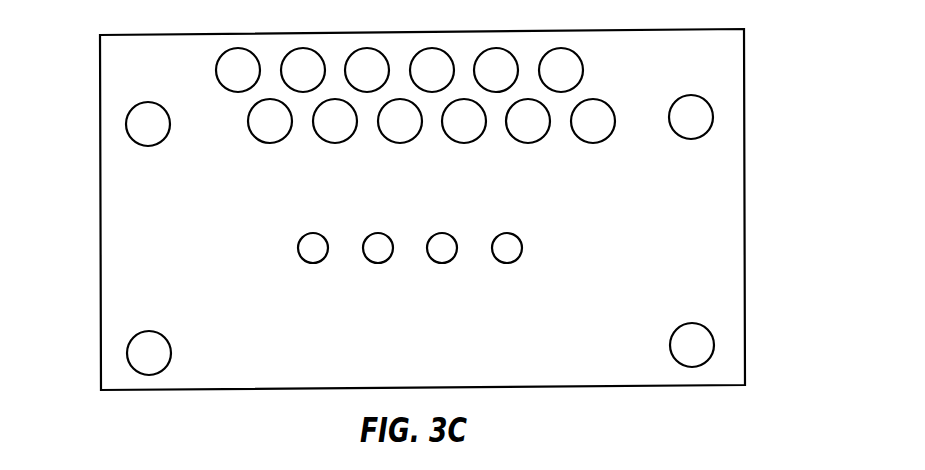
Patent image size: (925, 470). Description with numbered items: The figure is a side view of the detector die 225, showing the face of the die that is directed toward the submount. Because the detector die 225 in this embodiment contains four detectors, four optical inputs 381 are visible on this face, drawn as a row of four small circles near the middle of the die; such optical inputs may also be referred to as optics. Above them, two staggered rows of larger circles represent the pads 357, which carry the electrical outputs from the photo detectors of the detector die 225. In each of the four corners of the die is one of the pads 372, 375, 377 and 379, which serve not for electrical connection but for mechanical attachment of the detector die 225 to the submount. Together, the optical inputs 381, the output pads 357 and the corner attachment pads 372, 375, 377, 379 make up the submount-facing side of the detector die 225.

The detector die 225 is at (197, 248).
The pads 357 is at (592, 69).
The pad 372 is at (713, 116).
The pad 375 is at (128, 120).
The pad 377 is at (714, 344).
The pad 379 is at (129, 351).
The optical inputs 381 is at (532, 246).